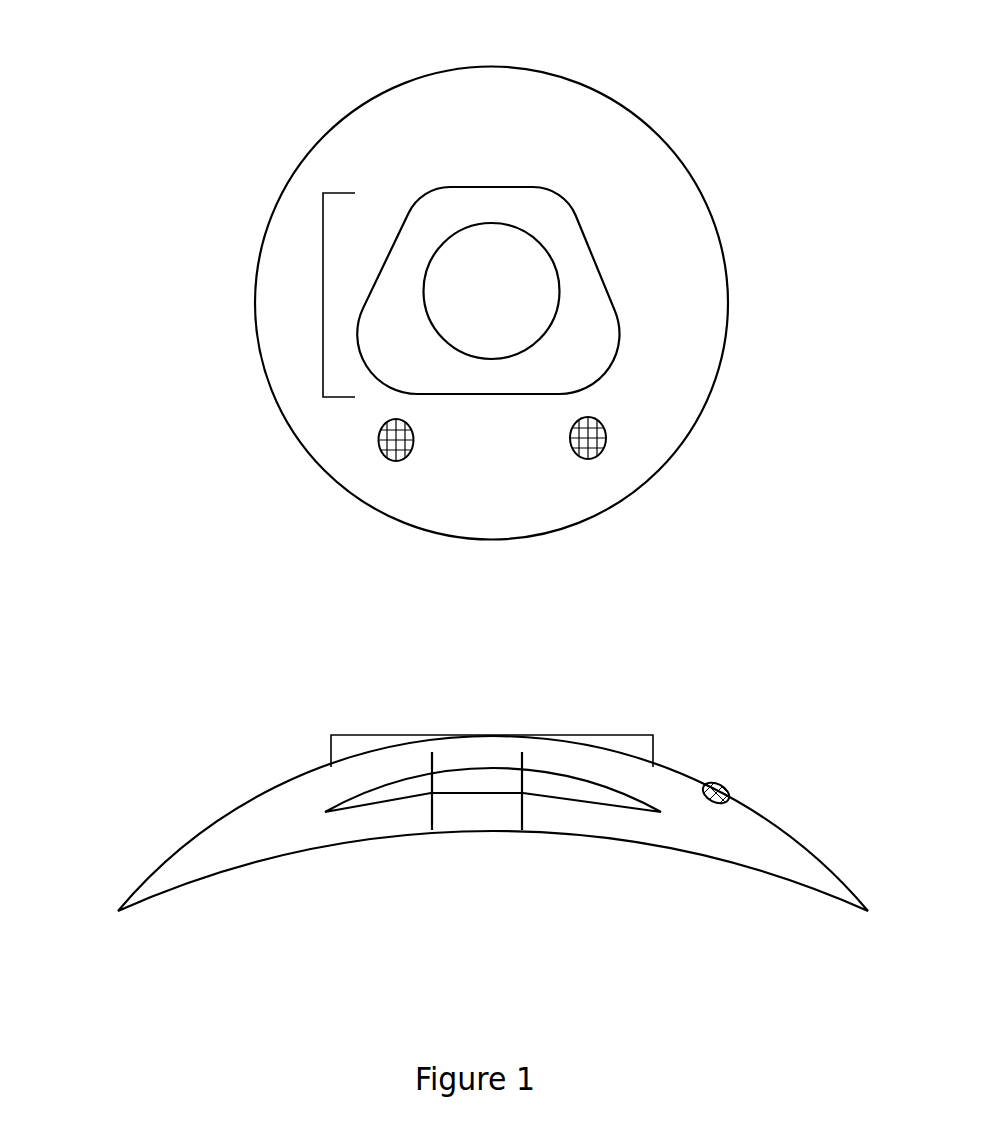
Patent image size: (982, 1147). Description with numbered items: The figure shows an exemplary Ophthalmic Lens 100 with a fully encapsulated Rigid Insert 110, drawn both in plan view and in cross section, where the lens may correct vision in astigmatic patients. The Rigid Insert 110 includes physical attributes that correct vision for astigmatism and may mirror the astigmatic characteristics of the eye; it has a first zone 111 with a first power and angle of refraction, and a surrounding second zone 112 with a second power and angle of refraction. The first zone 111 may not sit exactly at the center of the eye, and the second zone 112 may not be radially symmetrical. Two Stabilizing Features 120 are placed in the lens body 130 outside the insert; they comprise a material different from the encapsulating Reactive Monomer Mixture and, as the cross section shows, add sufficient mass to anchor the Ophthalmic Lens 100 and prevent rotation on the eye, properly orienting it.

The Ophthalmic Lens 100 is at (455, 497).
The Rigid Insert 110 is at (323, 303).
The first zone 111 is at (535, 287).
The second zone 112 is at (552, 217).
The Stabilizing Features 120 is at (606, 437).
The lens body 130 is at (407, 142).